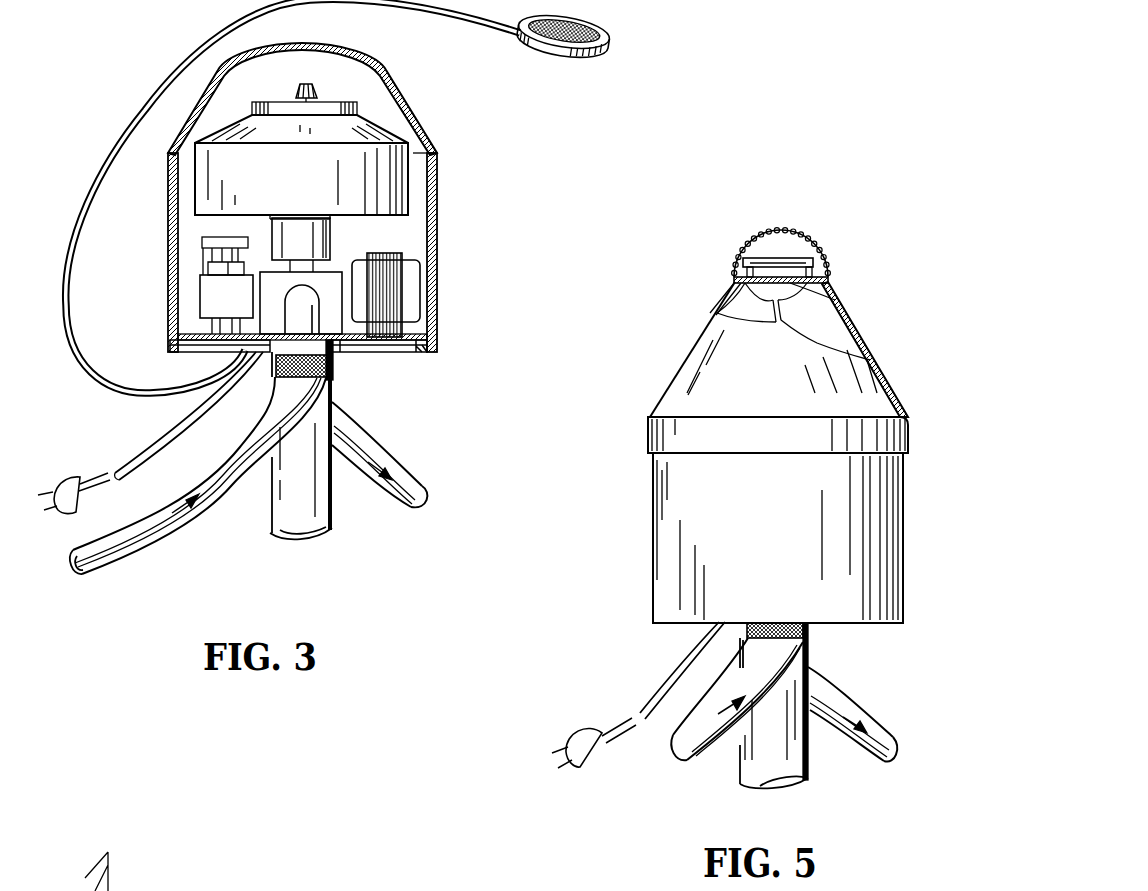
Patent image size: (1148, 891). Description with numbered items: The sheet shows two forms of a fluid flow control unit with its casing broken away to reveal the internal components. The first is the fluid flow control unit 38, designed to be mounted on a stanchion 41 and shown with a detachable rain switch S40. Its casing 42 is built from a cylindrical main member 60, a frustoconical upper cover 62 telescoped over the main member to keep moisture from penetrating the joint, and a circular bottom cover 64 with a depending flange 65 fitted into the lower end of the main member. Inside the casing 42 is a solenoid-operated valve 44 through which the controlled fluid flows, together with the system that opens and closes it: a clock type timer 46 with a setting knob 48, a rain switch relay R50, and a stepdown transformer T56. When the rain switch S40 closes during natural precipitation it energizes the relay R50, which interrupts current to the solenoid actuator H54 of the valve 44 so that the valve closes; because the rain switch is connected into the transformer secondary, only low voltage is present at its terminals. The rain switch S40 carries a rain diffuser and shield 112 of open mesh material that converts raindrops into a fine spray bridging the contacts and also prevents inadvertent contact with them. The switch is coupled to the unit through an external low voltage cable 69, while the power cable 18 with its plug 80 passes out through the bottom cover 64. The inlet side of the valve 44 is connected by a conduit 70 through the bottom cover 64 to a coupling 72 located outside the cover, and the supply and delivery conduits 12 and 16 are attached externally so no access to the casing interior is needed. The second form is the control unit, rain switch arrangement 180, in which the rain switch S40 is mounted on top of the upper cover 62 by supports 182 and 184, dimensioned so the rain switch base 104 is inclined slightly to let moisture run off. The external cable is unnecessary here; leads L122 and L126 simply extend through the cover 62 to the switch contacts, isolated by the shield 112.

In FIG. 3, the fluid supply conduit 12 is at (123, 551).
In FIG. 5, the fluid supply conduit 12 is at (726, 703).
In FIG. 3, the fluid distribution conduit 16 is at (382, 448).
In FIG. 5, the fluid distribution conduit 16 is at (853, 711).
In FIG. 3, the power cable 18 is at (166, 438).
In FIG. 5, the power cable 18 is at (659, 692).
In FIG. 3, the fluid flow control unit 38 is at (456, 171).
In FIG. 3, the stanchion 41 is at (334, 513).
In FIG. 5, the stanchion 41 is at (808, 781).
In FIG. 3, the casing 42 is at (436, 266).
In FIG. 5, the casing 42 is at (645, 527).
In FIG. 3, the solenoid-operated valve 44 is at (280, 294).
In FIG. 3, the clock type timer 46 is at (309, 190).
In FIG. 3, the setting knob 48 is at (296, 88).
In FIG. 3, the rain switch S40 is at (593, 42).
In FIG. 5, the rain switch S40 is at (807, 231).
In FIG. 3, the cylindrical main casing member 60 is at (438, 232).
In FIG. 5, the cylindrical main casing member 60 is at (791, 536).
In FIG. 3, the frustoconical upper cover 62 is at (399, 101).
In FIG. 5, the frustoconical upper cover 62 is at (786, 389).
In FIG. 3, the bottom cover 64 is at (341, 352).
In FIG. 3, the depending flange 65 is at (419, 355).
In FIG. 3, the external low voltage cable 69 is at (100, 165).
In FIG. 3, the conduit 70 is at (312, 306).
In FIG. 3, the coupling 72 is at (334, 375).
In FIG. 5, the coupling 72 is at (809, 636).
In FIG. 3, the plug 80 is at (74, 478).
In FIG. 5, the plug 80 is at (574, 733).
In FIG. 3, the solenoid actuator H54 is at (331, 240).
In FIG. 3, the rain switch relay R50 is at (215, 296).
In FIG. 3, the stepdown transformer T56 is at (418, 302).
In FIG. 5, the rain switch base 104 is at (781, 247).
In FIG. 3, the rain diffuser and shield 112 is at (597, 24).
In FIG. 5, the rain diffuser and shield 112 is at (782, 225).
In FIG. 5, the control unit, rain switch arrangement 180 is at (670, 368).
In FIG. 5, the support 182 is at (818, 274).
In FIG. 5, the support 184 is at (745, 271).
In FIG. 5, the lead L122 is at (830, 296).
In FIG. 5, the lead L126 is at (727, 293).